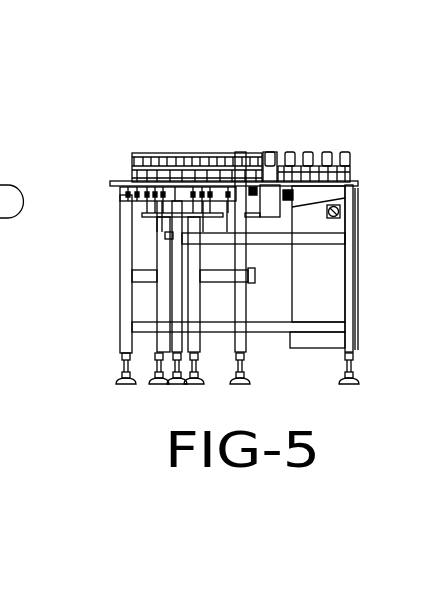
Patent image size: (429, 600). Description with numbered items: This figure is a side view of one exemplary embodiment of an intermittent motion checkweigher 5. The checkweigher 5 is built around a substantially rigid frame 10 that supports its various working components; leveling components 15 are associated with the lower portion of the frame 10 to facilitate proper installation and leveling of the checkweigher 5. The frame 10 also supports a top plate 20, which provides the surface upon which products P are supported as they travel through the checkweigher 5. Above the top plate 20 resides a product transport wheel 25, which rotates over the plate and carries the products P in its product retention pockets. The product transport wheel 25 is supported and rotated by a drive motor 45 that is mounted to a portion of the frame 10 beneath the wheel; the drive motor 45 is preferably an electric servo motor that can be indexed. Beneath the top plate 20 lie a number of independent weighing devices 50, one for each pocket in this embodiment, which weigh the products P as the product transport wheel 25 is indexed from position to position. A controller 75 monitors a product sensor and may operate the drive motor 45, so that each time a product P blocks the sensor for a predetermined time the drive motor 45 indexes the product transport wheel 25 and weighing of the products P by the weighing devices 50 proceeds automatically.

The intermittent motion checkweigher 5 is at (0, 78).
The frame 10 is at (100, 291).
The leveling components 15 is at (118, 381).
The top plate 20 is at (114, 181).
The product transport wheel 25 is at (145, 179).
The products P is at (200, 161).
The weighing devices 50 is at (138, 231).
The drive motor 45 is at (250, 256).
The controller 75 is at (320, 282).